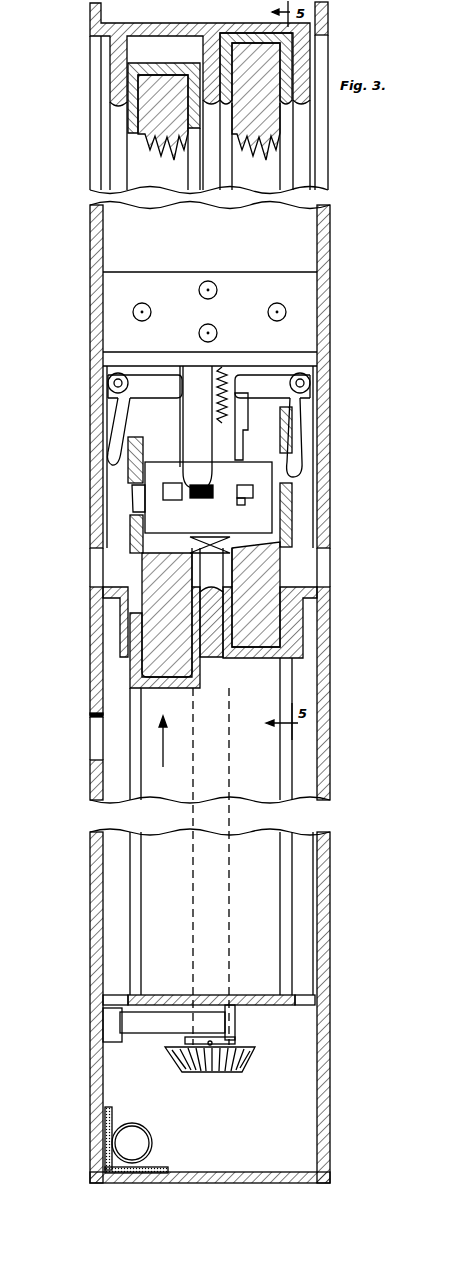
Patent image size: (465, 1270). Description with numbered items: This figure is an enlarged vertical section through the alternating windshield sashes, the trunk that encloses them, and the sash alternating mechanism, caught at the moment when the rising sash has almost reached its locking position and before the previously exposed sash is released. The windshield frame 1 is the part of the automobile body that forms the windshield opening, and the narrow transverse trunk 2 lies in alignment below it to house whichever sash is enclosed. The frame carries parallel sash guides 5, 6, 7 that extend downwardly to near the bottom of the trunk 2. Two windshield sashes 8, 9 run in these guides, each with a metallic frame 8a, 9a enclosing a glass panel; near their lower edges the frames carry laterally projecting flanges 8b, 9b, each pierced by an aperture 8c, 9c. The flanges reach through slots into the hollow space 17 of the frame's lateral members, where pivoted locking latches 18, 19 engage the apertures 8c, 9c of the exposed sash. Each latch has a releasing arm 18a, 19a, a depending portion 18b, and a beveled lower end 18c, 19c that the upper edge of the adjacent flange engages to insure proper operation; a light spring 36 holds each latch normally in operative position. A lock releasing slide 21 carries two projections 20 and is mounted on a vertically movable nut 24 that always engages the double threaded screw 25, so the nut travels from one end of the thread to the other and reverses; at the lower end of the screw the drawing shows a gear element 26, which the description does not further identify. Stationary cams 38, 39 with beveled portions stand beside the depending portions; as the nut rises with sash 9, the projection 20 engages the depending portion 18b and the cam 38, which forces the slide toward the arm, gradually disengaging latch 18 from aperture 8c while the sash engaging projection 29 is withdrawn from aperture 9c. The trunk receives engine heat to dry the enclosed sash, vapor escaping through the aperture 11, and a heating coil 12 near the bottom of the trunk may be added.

The windshield frame 1 is at (91, 125).
The trunk 2 is at (328, 741).
The sash guide 5 is at (118, 172).
The sash guide 6 is at (215, 173).
The sash guide 7 is at (302, 163).
The windshield sash 8 is at (268, 127).
The sash frame 8a is at (293, 38).
The flange 8b is at (283, 513).
The aperture 8c is at (285, 477).
The windshield sash 9 is at (150, 138).
The sash frame 9a is at (185, 73).
The flange 9b is at (130, 538).
The aperture 9c is at (130, 510).
The aperture 11 is at (98, 743).
The heating coil 12 is at (118, 1143).
The space 17 is at (298, 253).
The locking latch 18 is at (306, 425).
The releasing arm 18a is at (272, 385).
The depending portion 18b is at (240, 498).
The beveled portion 18c is at (285, 458).
The locking latch 19 is at (117, 419).
The releasing arm 19a is at (145, 385).
The beveled portion 19c is at (109, 458).
The projection 20 is at (199, 504).
The lock releasing slide 21 is at (170, 500).
The nut 24 is at (290, 532).
The double threaded screw 25 is at (195, 540).
The bevel gear 26 is at (252, 1058).
The sash engaging projection 29 is at (130, 488).
The spring 36 is at (223, 377).
The stationary cam 38 is at (197, 427).
The stationary cam 39 is at (249, 426).